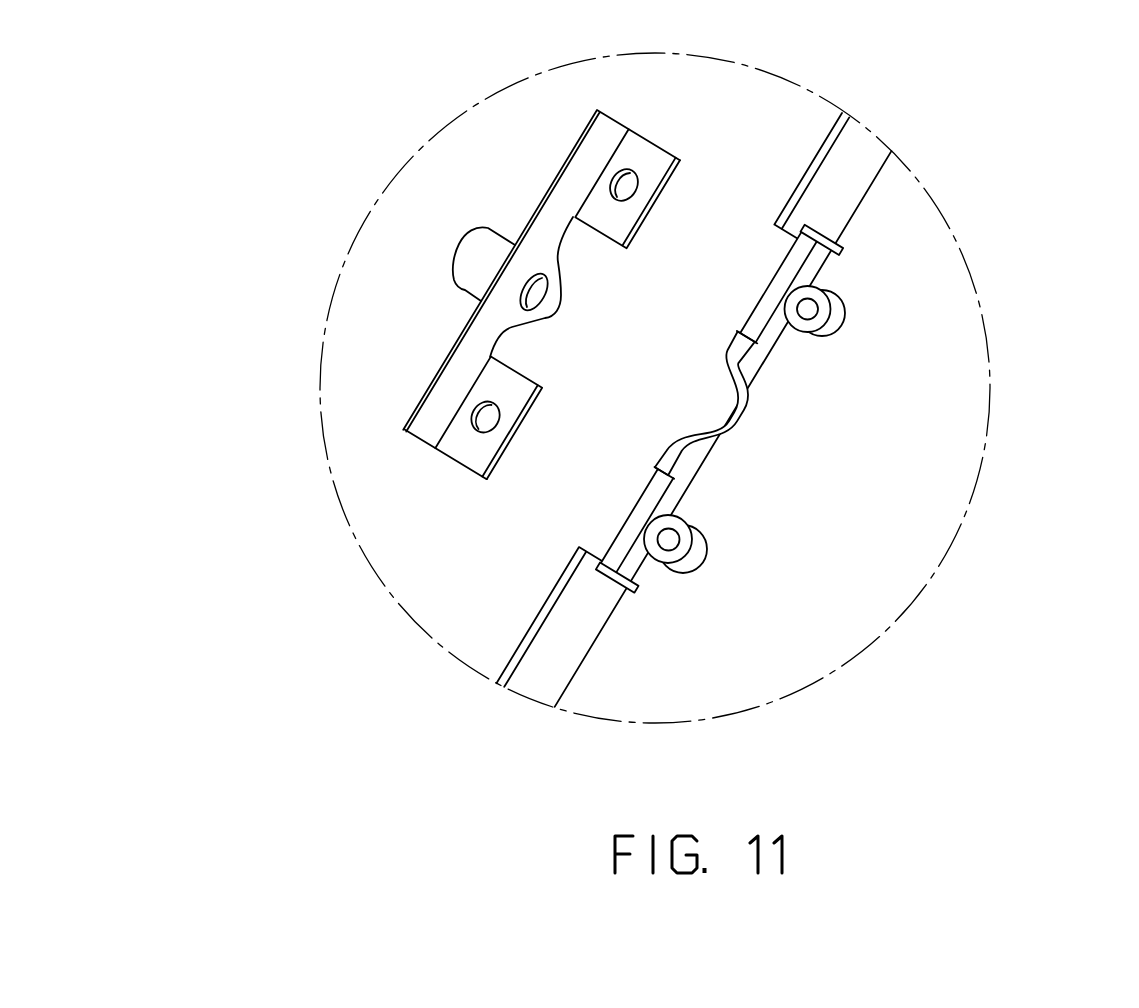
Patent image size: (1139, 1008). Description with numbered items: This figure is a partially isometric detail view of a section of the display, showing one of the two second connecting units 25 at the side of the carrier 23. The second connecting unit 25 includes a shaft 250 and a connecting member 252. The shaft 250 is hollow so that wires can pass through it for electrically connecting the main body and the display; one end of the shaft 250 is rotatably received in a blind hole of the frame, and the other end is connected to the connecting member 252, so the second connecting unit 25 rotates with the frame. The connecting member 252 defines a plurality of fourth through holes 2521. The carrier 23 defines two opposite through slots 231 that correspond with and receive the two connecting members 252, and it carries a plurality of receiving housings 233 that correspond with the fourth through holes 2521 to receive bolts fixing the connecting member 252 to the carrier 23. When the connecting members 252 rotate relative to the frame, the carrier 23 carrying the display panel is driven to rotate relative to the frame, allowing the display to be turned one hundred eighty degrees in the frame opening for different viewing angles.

The carrier 23 is at (803, 414).
The through slot 231 is at (800, 259).
The receiving housing 233 is at (680, 546).
The second connecting unit 25 is at (440, 380).
The shaft 250 is at (470, 260).
The connecting member 252 is at (440, 411).
The fourth through hole 2521 is at (411, 545).